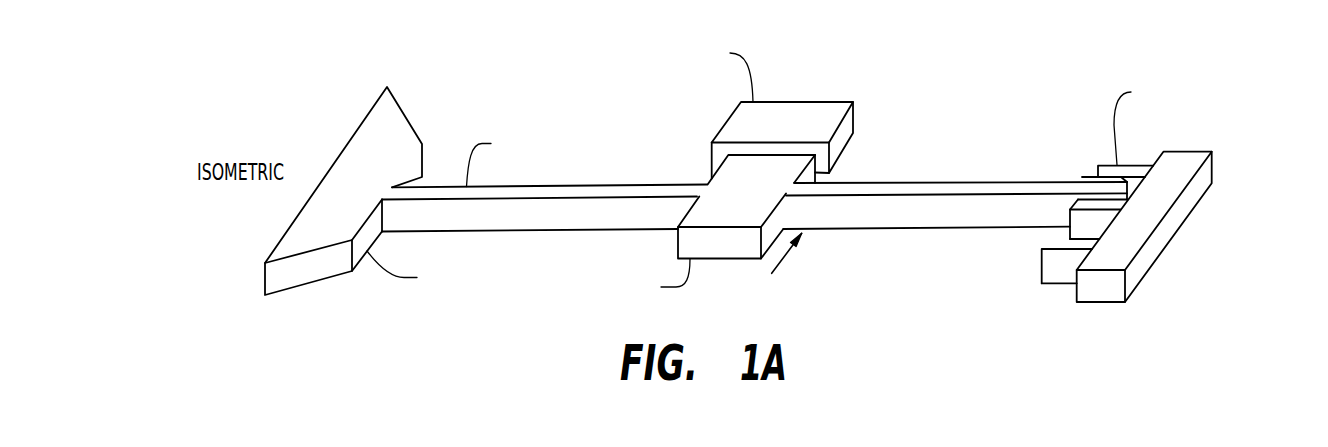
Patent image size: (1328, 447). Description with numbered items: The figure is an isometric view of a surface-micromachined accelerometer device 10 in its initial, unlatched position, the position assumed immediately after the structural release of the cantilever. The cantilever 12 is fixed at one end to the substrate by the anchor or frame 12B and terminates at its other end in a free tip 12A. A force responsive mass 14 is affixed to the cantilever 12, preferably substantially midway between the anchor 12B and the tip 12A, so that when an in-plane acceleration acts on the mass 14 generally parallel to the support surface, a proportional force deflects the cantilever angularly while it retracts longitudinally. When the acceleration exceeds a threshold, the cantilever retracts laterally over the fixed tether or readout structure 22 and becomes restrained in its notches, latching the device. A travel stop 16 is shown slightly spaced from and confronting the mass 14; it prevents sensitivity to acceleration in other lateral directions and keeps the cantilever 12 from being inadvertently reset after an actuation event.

The device 10 is at (893, 118).
The cantilever 12 is at (933, 188).
The tip 12A is at (1127, 185).
The anchor 12B is at (308, 284).
The mass 14 is at (733, 259).
The travel stop 16 is at (795, 102).
The readout structure 22 is at (1100, 302).